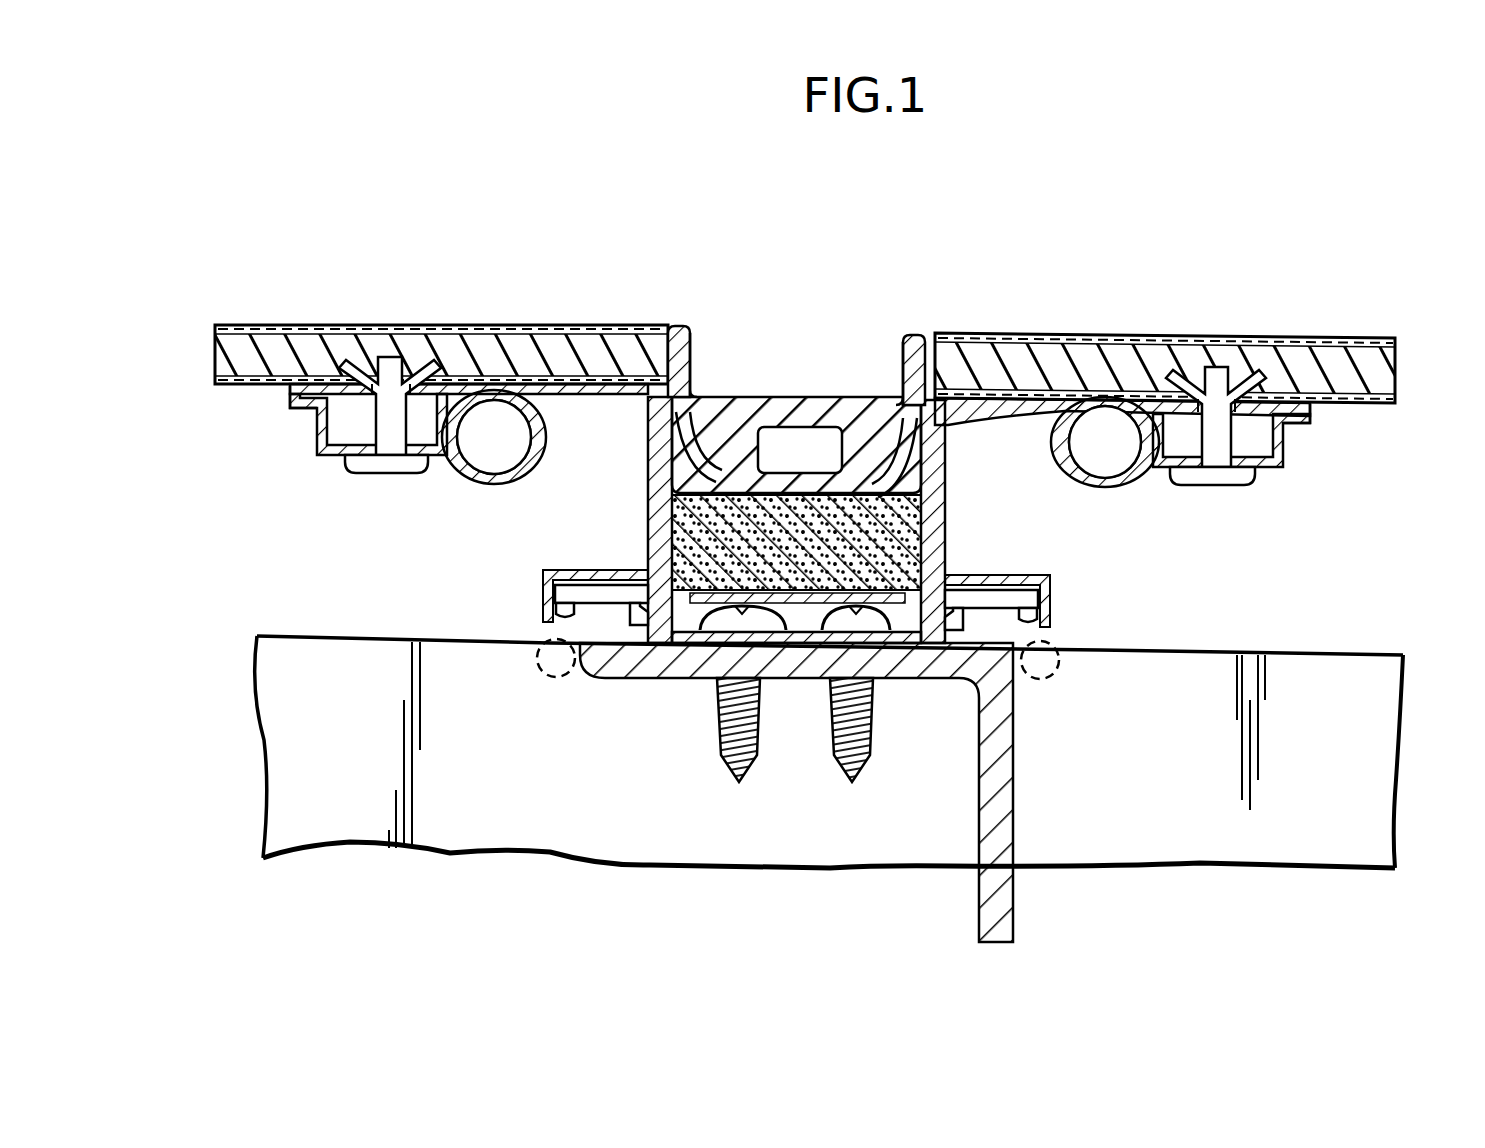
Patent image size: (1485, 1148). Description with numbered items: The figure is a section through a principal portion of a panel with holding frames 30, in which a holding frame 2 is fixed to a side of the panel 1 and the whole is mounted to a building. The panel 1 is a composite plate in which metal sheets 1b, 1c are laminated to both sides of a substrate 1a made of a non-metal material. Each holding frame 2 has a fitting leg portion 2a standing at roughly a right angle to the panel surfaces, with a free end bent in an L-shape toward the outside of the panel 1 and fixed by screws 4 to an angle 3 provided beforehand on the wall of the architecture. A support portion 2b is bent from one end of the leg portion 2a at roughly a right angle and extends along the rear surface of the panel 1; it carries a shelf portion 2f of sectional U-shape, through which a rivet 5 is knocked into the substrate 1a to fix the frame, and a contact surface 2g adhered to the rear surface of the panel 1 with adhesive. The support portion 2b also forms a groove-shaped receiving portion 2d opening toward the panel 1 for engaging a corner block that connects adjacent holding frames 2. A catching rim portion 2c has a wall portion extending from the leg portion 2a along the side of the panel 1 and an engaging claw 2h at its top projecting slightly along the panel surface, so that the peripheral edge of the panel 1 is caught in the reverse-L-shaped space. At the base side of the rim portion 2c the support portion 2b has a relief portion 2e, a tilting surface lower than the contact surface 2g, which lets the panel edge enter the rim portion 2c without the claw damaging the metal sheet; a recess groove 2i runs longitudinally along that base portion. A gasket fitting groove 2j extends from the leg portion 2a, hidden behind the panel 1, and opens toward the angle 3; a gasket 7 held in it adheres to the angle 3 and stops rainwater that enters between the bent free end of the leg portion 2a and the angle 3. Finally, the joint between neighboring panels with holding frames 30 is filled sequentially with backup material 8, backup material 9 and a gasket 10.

The panel 1 is at (1203, 332).
The substrate 1a is at (215, 352).
The metal sheet 1b is at (250, 325).
The metal sheet 1c is at (292, 398).
The holding frame 2 is at (782, 567).
The fitting leg portion 2a is at (648, 505).
The support portion 2b is at (450, 465).
The catching rim portion 2c is at (690, 340).
The receiving portion 2d is at (495, 455).
The relief portion 2e is at (596, 390).
The shelf portion 2f is at (330, 460).
The contact surface 2g is at (306, 340).
The engaging claw 2h is at (675, 325).
The recess groove 2i is at (705, 375).
The gasket fitting groove 2j is at (548, 588).
The angle 3 is at (630, 672).
The screws 4 is at (720, 733).
The rivet 5 is at (380, 422).
The gasket 7 is at (558, 676).
The backup material 8 is at (805, 560).
The backup material 9 is at (818, 600).
The gasket 10 is at (808, 398).
The panel with holding frames 30 is at (794, 299).